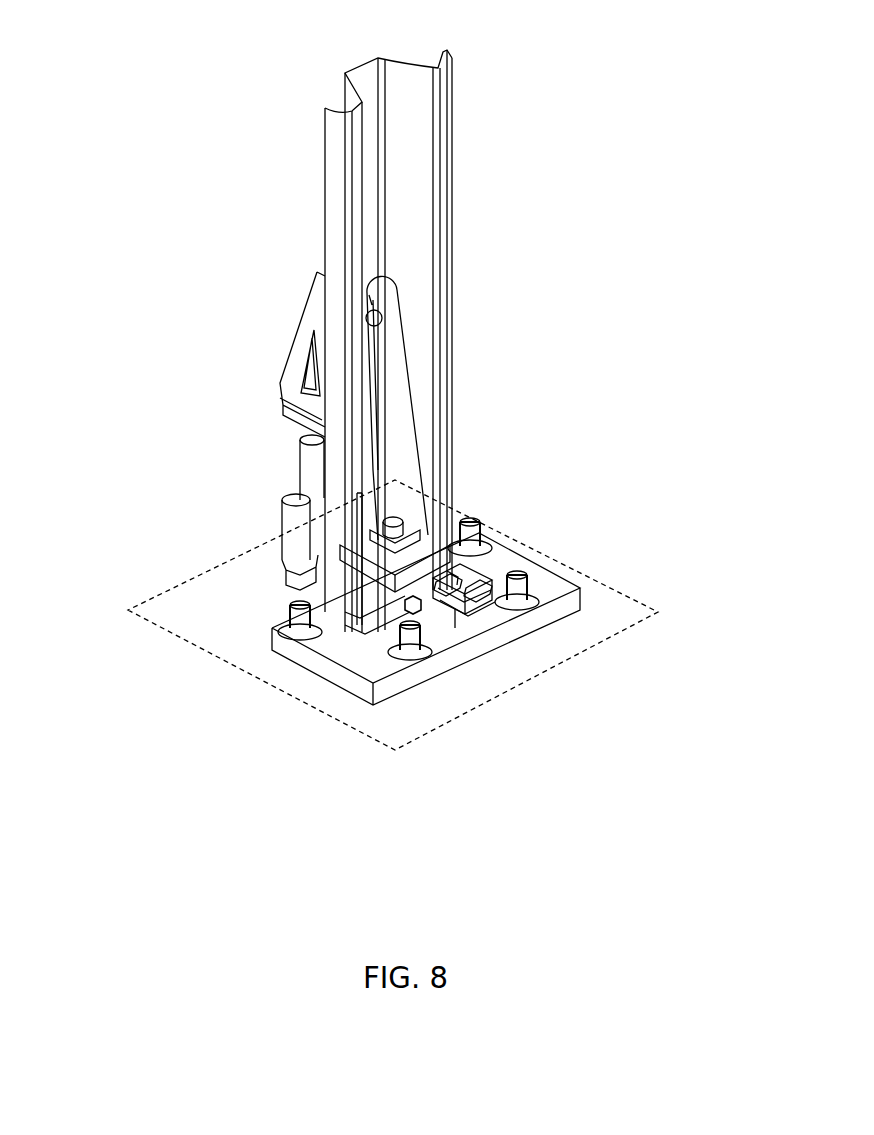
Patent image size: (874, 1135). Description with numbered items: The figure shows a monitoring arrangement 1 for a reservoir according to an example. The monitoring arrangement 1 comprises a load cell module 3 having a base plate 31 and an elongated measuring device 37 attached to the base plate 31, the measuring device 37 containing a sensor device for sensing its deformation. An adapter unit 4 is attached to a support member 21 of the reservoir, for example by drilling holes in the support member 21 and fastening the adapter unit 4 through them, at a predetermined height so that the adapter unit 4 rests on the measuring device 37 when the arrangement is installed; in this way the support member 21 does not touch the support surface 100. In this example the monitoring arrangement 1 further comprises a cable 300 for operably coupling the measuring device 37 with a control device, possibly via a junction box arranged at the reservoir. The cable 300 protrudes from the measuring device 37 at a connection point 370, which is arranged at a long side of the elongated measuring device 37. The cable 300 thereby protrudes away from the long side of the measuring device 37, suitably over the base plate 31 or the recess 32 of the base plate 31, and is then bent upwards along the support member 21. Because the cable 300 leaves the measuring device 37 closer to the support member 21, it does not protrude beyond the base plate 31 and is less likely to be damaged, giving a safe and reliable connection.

The monitoring arrangement 1 is at (186, 108).
The support member 21 is at (440, 147).
The adapter unit 4 is at (408, 328).
The load cell module 3 is at (250, 722).
The support surface 100 is at (620, 600).
The base plate 31 is at (360, 688).
The recess 32 is at (480, 578).
The measuring device 37 is at (478, 620).
The connection point 370 is at (415, 608).
The cable 300 is at (383, 540).